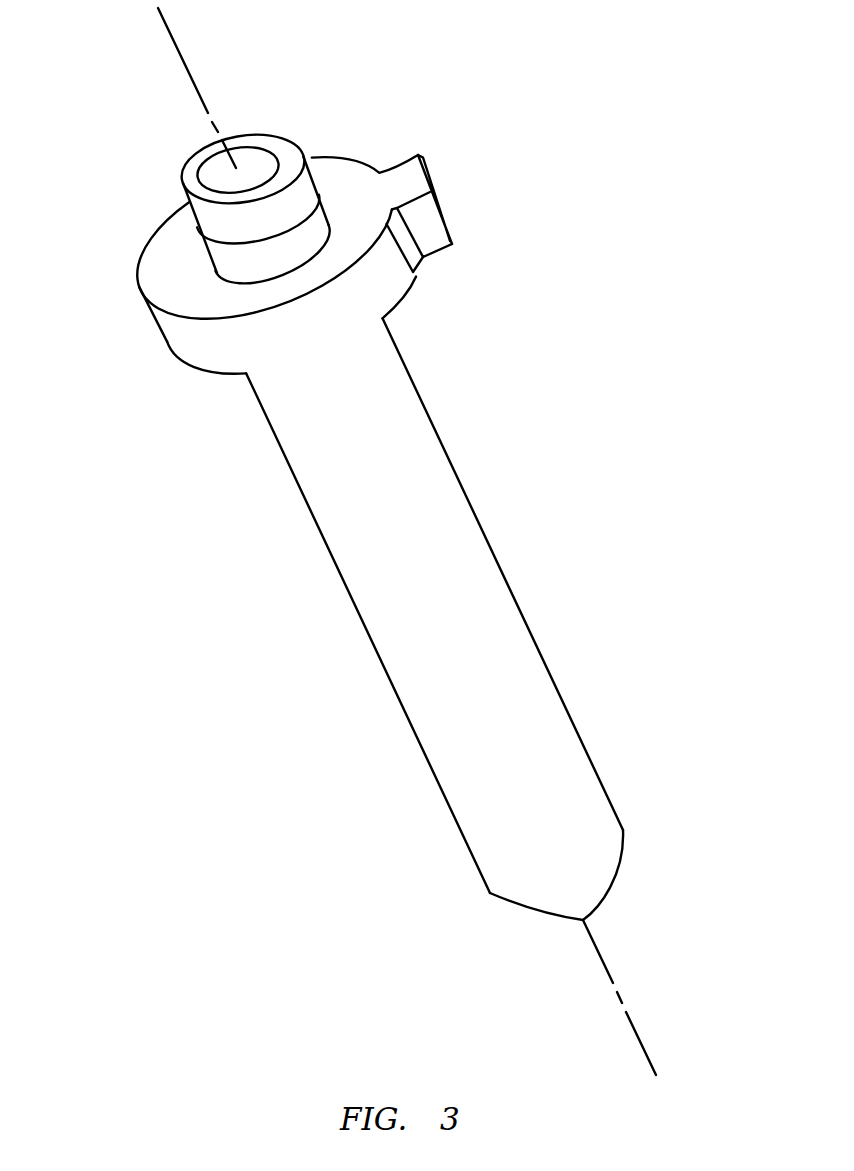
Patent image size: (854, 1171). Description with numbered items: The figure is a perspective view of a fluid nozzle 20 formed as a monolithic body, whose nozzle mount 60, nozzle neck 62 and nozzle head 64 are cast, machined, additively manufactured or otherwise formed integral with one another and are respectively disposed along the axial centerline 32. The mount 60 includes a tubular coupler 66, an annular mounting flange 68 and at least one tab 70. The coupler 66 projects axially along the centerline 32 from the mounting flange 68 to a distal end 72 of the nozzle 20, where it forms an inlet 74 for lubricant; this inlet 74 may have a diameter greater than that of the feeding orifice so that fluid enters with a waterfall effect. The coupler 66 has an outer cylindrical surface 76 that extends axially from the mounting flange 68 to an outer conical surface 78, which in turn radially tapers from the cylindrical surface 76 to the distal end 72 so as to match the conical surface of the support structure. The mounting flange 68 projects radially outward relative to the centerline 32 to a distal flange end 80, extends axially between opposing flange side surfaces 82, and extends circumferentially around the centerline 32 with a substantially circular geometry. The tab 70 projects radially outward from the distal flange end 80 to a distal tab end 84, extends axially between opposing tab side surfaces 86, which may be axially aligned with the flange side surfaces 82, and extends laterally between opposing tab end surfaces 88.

The nozzle 20 is at (565, 143).
The axial centerline 32 is at (642, 1052).
The nozzle mount 60 is at (351, 128).
The nozzle neck 62 is at (505, 503).
The nozzle head 64 is at (650, 822).
The tubular coupler 66 is at (176, 228).
The annular mounting flange 68 is at (137, 303).
The tab 70 is at (455, 202).
The distal end 72 is at (257, 138).
The inlet 74 is at (214, 172).
The outer cylindrical surface 76 is at (215, 253).
The outer conical surface 78 is at (198, 205).
The distal flange end 80 is at (176, 340).
The flange side surfaces 82 is at (208, 313).
The distal tab end 84 is at (431, 182).
The tab side surfaces 86 is at (397, 167).
The tab end surfaces 88 is at (418, 154).